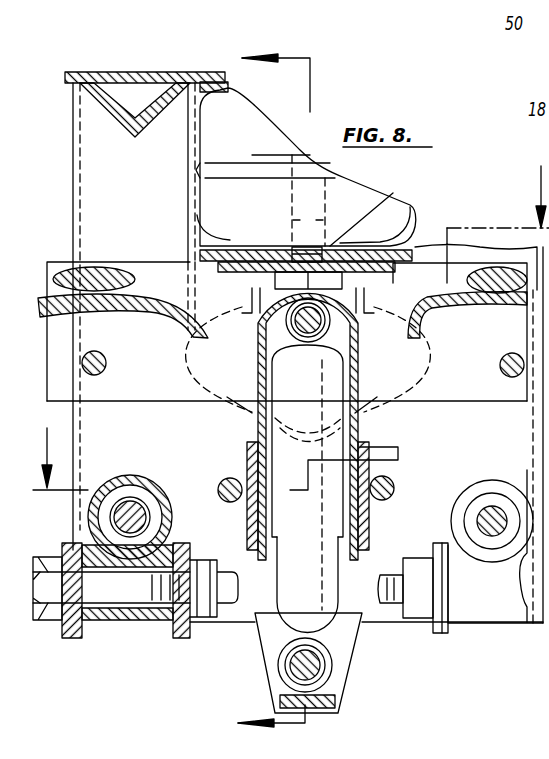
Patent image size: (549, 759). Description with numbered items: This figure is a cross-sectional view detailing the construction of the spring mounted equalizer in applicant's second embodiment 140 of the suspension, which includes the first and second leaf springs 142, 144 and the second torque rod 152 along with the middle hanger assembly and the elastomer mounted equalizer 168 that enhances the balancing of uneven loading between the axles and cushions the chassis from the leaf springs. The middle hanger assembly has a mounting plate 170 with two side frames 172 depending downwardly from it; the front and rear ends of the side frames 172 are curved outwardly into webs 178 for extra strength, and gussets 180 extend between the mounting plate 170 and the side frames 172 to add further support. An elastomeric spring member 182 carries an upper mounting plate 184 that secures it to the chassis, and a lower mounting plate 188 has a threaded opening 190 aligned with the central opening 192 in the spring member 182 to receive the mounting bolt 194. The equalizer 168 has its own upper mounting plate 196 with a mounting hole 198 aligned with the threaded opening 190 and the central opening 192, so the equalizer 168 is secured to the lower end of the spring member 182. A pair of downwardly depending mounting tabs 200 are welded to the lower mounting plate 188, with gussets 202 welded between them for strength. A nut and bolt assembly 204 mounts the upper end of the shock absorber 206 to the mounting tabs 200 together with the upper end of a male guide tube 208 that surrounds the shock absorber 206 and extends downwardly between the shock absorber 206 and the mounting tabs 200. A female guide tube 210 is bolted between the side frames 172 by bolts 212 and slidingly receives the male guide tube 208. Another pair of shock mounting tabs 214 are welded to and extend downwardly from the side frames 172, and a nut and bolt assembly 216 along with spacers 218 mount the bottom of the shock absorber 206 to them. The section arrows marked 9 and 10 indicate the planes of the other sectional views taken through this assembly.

The section line 9- 9 is at (264, 387).
The section line 10- 10 is at (291, 316).
The second embodiment 140 is at (42, 636).
The first leaf spring 142 is at (108, 307).
The second leaf spring 144 is at (460, 310).
The second torque rod 152 is at (488, 636).
The elastomer mounted equalizer 168 is at (57, 262).
The mounting plate 170 is at (118, 72).
The side frames 172 is at (93, 182).
The webs 178 is at (73, 153).
The gussets 180 is at (123, 131).
The elastomeric spring member 182 is at (258, 131).
The upper mounting plate 184 is at (228, 85).
The lower mounting plate 188 is at (415, 238).
The threaded opening 190 is at (305, 247).
The central opening 192 is at (315, 195).
The mounting bolt 194 is at (390, 197).
The upper mounting plate 196 is at (447, 283).
The mounting hole 198 is at (262, 282).
The mounting tabs 200 is at (152, 398).
The gussets 202 is at (288, 304).
The nut and bolt assembly 204 is at (275, 336).
The shock absorber 206 is at (330, 580).
The male guide tube 208 is at (352, 429).
The female guide tube 210 is at (366, 521).
The bolts 212 is at (218, 487).
The shock mounting tabs 214 is at (271, 642).
The nut and bolt assembly 216 is at (335, 663).
The spacers 218 is at (292, 669).